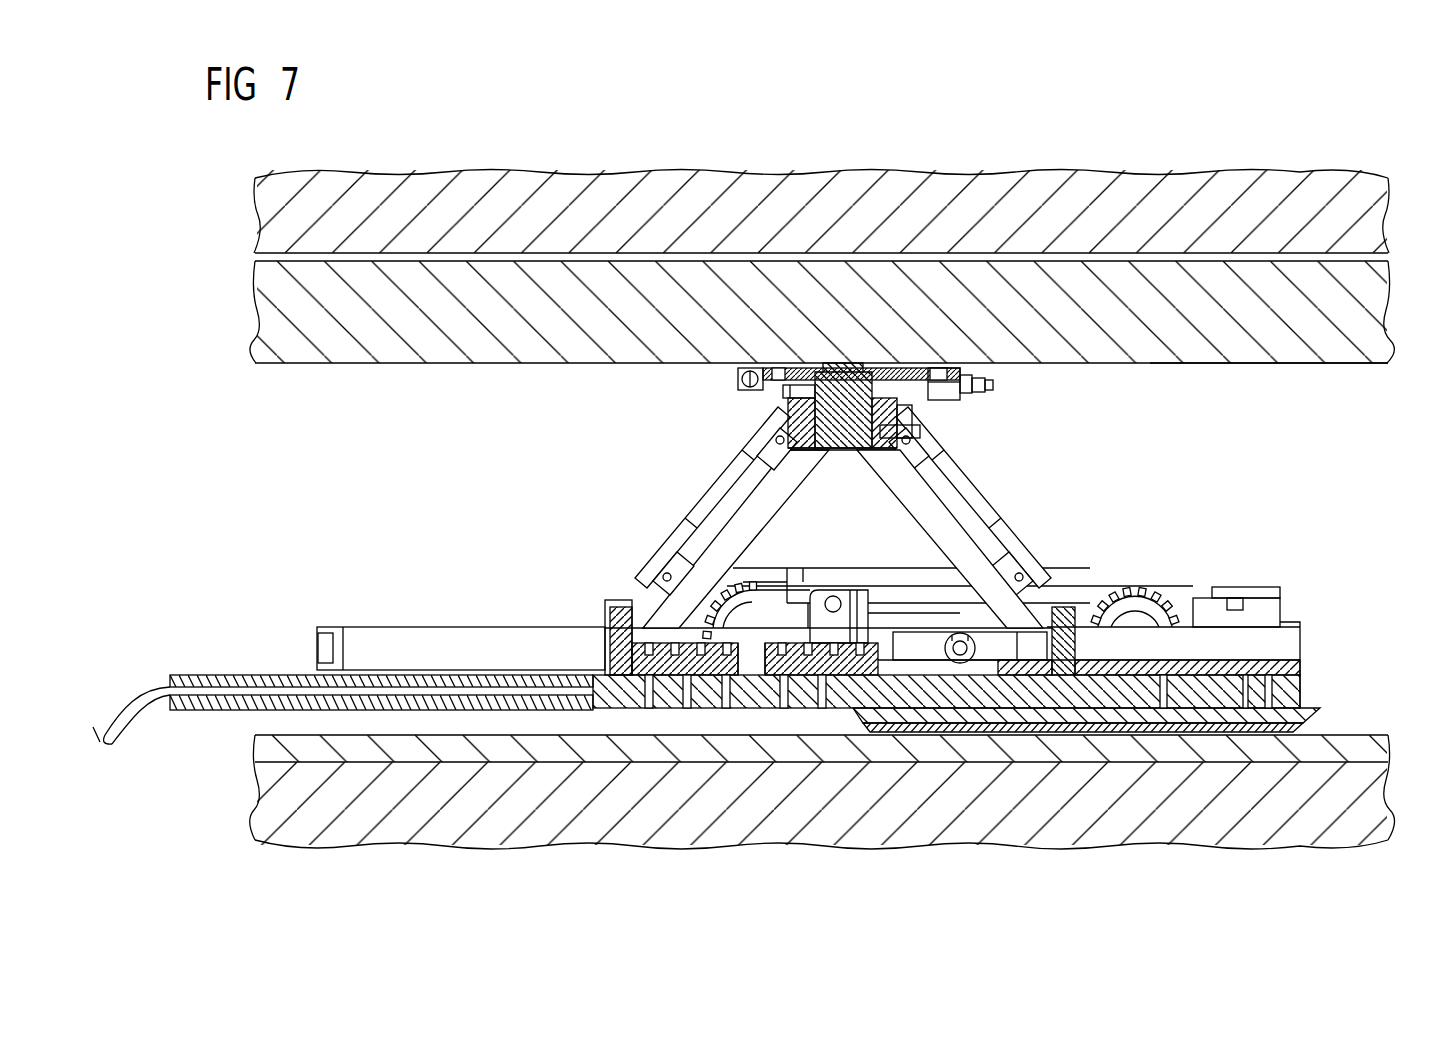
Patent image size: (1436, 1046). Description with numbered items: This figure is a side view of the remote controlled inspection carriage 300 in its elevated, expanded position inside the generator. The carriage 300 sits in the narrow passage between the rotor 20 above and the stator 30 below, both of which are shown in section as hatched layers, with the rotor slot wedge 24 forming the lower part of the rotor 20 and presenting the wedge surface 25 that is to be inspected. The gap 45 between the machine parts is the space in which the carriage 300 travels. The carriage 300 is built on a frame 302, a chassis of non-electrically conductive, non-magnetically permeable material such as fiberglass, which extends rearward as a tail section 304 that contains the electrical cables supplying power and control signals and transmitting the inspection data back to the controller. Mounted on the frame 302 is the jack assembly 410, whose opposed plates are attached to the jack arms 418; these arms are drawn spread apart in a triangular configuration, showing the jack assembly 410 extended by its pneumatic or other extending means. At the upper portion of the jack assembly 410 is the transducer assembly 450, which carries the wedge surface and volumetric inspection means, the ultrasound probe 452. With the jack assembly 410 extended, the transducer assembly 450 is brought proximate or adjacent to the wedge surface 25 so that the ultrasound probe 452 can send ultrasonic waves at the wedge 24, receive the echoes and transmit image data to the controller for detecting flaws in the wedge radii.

The rotor 20 is at (853, 229).
The wedge 24 is at (853, 316).
The wedge surface 25 is at (1208, 364).
The stator 30 is at (853, 814).
The gap 45 is at (447, 514).
The carriage 300 is at (1312, 572).
The frame 302 is at (618, 697).
The tail section 304 is at (257, 675).
The jack assembly 410 is at (690, 495).
The jack arm 418 is at (940, 527).
The transducer assembly 450 is at (737, 407).
The ultrasound probe 452 is at (843, 417).